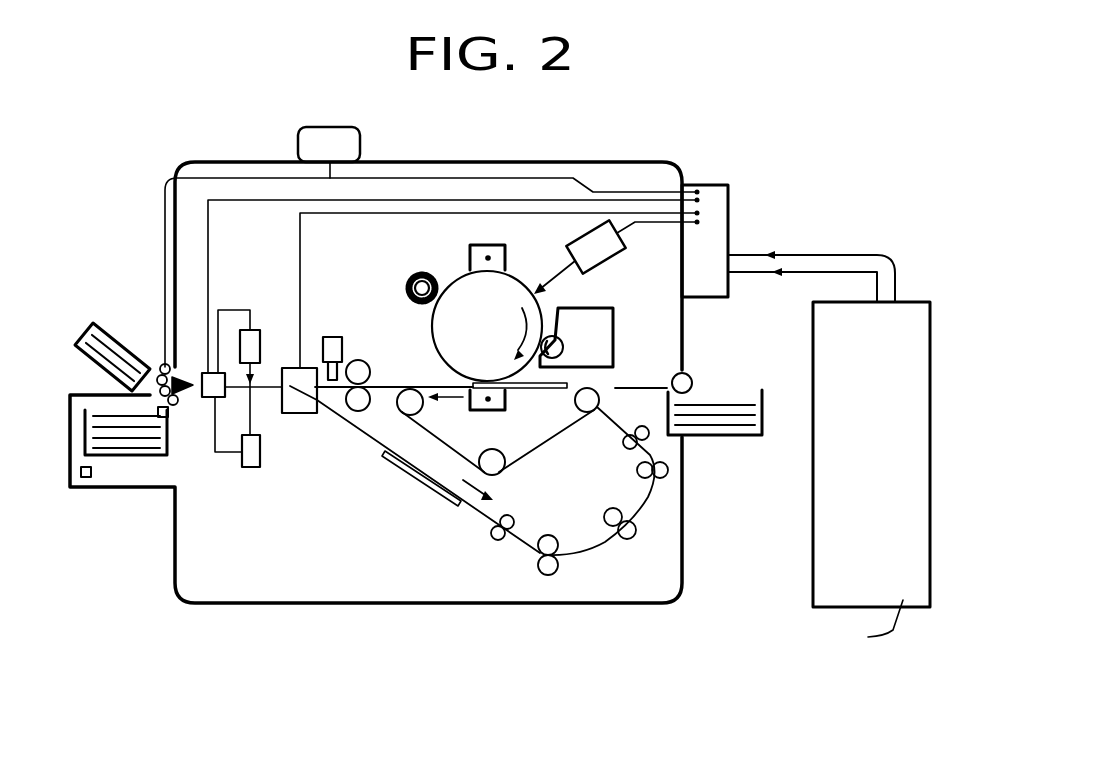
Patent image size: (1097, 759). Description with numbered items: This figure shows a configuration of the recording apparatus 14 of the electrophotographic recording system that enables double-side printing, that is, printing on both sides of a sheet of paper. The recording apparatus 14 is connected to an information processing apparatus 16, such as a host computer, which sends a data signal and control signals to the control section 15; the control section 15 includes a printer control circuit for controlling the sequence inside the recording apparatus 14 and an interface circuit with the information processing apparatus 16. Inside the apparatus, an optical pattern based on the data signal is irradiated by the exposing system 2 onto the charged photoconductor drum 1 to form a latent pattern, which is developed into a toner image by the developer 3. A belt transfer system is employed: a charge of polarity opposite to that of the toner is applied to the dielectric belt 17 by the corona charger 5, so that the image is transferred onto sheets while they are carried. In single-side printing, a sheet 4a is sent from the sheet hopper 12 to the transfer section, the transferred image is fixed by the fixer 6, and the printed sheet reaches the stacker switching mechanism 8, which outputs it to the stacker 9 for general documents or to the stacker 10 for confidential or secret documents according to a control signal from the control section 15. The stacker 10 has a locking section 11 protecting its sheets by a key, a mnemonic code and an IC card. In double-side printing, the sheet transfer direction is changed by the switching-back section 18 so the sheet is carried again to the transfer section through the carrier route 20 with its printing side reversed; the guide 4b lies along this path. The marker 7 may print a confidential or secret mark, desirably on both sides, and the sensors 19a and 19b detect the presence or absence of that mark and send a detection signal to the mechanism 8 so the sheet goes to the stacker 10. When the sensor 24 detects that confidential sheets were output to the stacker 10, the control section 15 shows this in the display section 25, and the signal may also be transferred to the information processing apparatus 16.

The photoconductor drum 1 is at (462, 287).
The exposing system 2 is at (613, 250).
The developer 3 is at (613, 322).
The sheet 4a is at (540, 390).
The conveying guide plate 4b is at (455, 502).
The corona charger 5 is at (488, 412).
The fixer 6 is at (358, 360).
The marker 7 is at (333, 337).
The stacker switching mechanism 8 is at (208, 400).
The output stacker 9 is at (110, 345).
The output stacker 10 is at (128, 448).
The locking section 11 is at (85, 482).
The sheet hopper 12 is at (722, 392).
The recording apparatus 14 is at (628, 170).
The control section 15 is at (722, 205).
The information processing apparatus 16 is at (908, 302).
The dielectric belt 17 is at (563, 428).
The switching-back section 18 is at (305, 413).
The sensor 19a is at (251, 467).
The sensor 19b is at (252, 330).
The carrier route 20 is at (598, 542).
The sensor 24 is at (168, 420).
The display section 25 is at (362, 143).